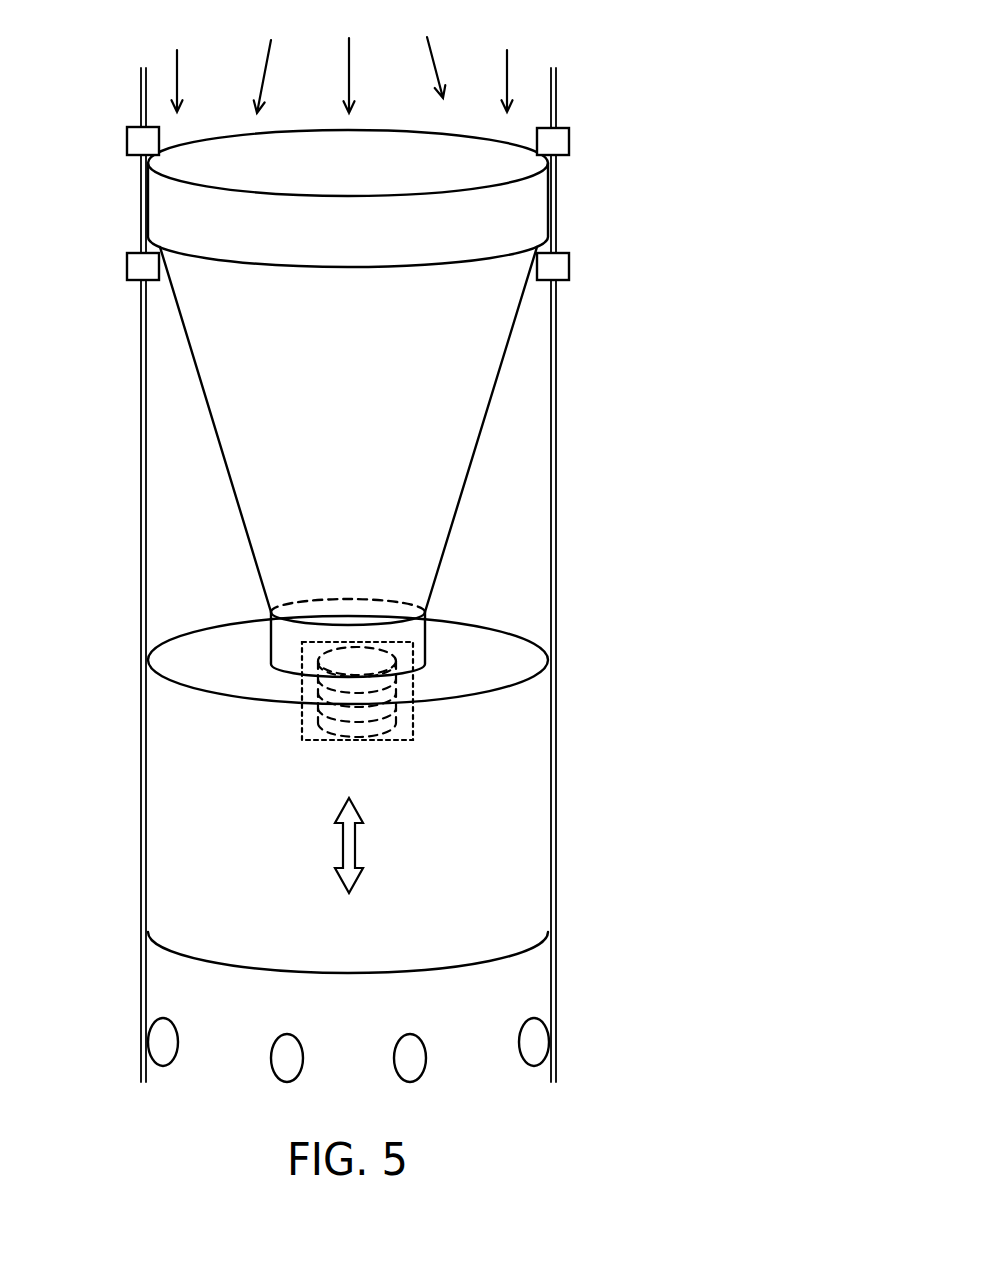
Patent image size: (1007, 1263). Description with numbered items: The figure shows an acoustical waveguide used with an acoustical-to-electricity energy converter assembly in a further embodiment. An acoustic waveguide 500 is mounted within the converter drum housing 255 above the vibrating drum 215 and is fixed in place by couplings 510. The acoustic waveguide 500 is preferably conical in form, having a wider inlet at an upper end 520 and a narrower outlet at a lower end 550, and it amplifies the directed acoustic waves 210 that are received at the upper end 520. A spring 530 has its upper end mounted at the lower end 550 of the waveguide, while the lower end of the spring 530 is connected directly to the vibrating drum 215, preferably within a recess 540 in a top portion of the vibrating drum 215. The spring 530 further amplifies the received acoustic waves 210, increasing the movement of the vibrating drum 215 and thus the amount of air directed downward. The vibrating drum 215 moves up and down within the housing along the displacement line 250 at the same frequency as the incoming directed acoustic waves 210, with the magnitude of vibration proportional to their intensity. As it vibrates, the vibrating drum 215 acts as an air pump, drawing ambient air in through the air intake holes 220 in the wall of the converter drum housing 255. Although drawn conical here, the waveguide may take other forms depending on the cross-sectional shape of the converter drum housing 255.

The directed acoustic waves 210 is at (512, 65).
The couplings 510 is at (568, 248).
The upper end 520 is at (172, 208).
The acoustic waveguide 500 is at (421, 372).
The converter drum housing 255 is at (558, 557).
The lower end 550 is at (290, 639).
The spring 530 is at (400, 713).
The recess 540 is at (302, 738).
The vibrating drum 215 is at (520, 782).
The displacement line 250 is at (358, 842).
The air intake holes 220 is at (535, 1010).